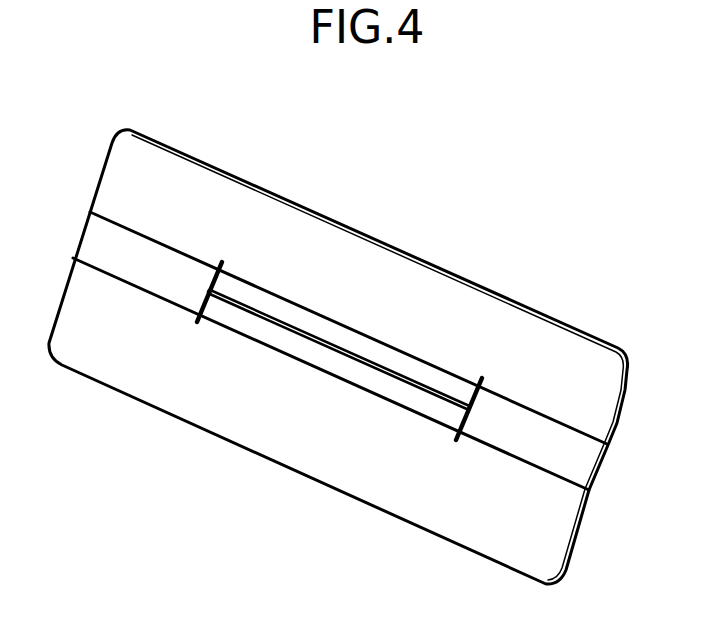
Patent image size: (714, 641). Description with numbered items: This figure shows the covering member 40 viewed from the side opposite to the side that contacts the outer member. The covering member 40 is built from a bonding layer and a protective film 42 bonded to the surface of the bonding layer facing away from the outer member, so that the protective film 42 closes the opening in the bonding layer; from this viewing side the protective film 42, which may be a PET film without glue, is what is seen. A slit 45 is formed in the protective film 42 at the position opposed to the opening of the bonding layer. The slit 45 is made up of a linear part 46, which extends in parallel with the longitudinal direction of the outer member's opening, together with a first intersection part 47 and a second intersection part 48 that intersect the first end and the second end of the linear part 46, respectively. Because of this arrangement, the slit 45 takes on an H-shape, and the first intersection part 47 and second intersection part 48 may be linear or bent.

The covering member 40 is at (549, 196).
The protective film 42 is at (553, 343).
The slit 45 is at (487, 229).
The linear part 46 is at (318, 338).
The first intersection part 47 is at (210, 277).
The second intersection part 48 is at (470, 397).